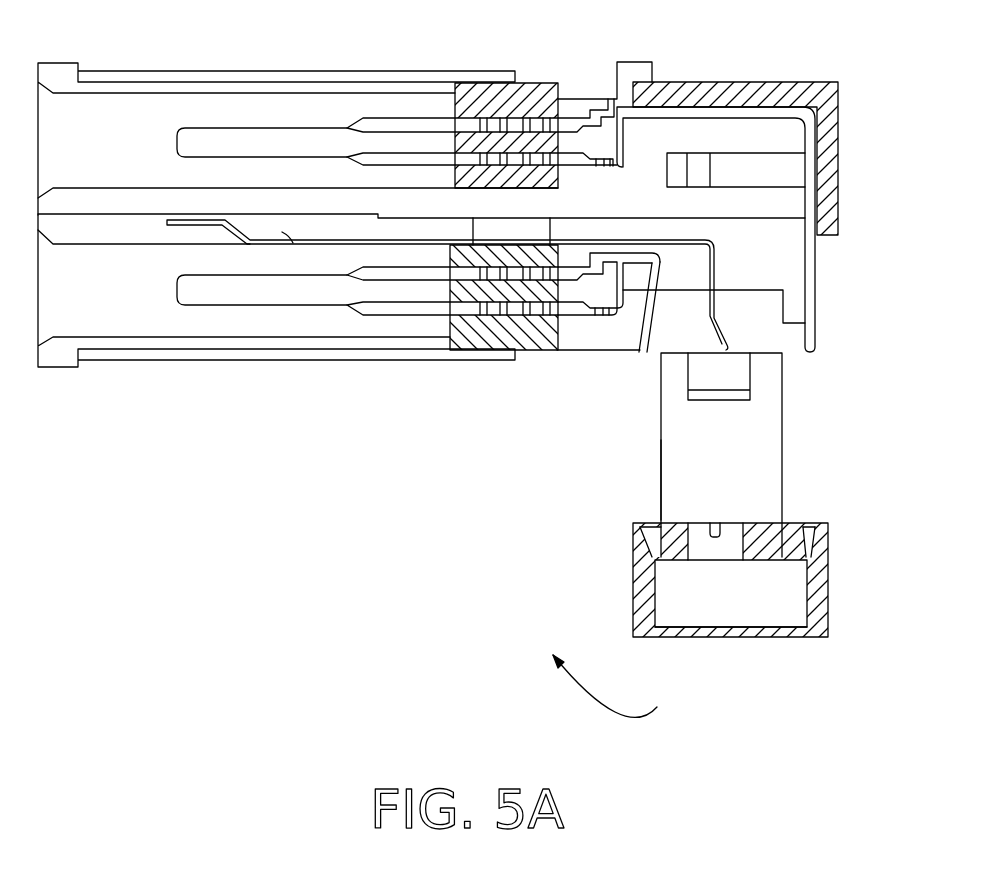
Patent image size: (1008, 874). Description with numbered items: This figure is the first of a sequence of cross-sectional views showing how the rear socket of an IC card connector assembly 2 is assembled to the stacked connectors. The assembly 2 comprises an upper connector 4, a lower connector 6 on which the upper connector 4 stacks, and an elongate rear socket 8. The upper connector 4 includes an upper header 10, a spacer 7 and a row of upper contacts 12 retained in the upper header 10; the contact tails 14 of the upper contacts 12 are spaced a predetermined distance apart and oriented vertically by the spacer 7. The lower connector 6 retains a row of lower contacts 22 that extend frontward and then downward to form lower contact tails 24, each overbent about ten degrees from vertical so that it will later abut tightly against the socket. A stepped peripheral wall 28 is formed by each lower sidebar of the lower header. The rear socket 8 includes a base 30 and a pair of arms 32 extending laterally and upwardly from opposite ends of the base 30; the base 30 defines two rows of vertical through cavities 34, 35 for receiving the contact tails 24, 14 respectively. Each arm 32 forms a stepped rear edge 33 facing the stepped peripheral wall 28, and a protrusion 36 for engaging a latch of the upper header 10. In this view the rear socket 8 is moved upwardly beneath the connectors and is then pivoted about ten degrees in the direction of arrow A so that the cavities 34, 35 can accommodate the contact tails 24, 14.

The IC card connector assembly 2 is at (486, 358).
The upper connector 4 is at (250, 98).
The lower connector 6 is at (197, 318).
The spacer 7 is at (809, 75).
The rear socket 8 is at (744, 654).
The upper header 10 is at (540, 92).
The upper contacts 12 is at (468, 128).
The contact tails 14 is at (810, 300).
The lower contacts 22 is at (390, 303).
The lower contact tails 24 is at (642, 348).
The stepped peripheral wall 28 is at (638, 335).
The base 30 is at (640, 578).
The arms 32 is at (768, 442).
The stepped rear edge 33 is at (660, 482).
The cavities 34 is at (810, 530).
The cavities 35 is at (643, 533).
The protrusion 36 is at (733, 392).